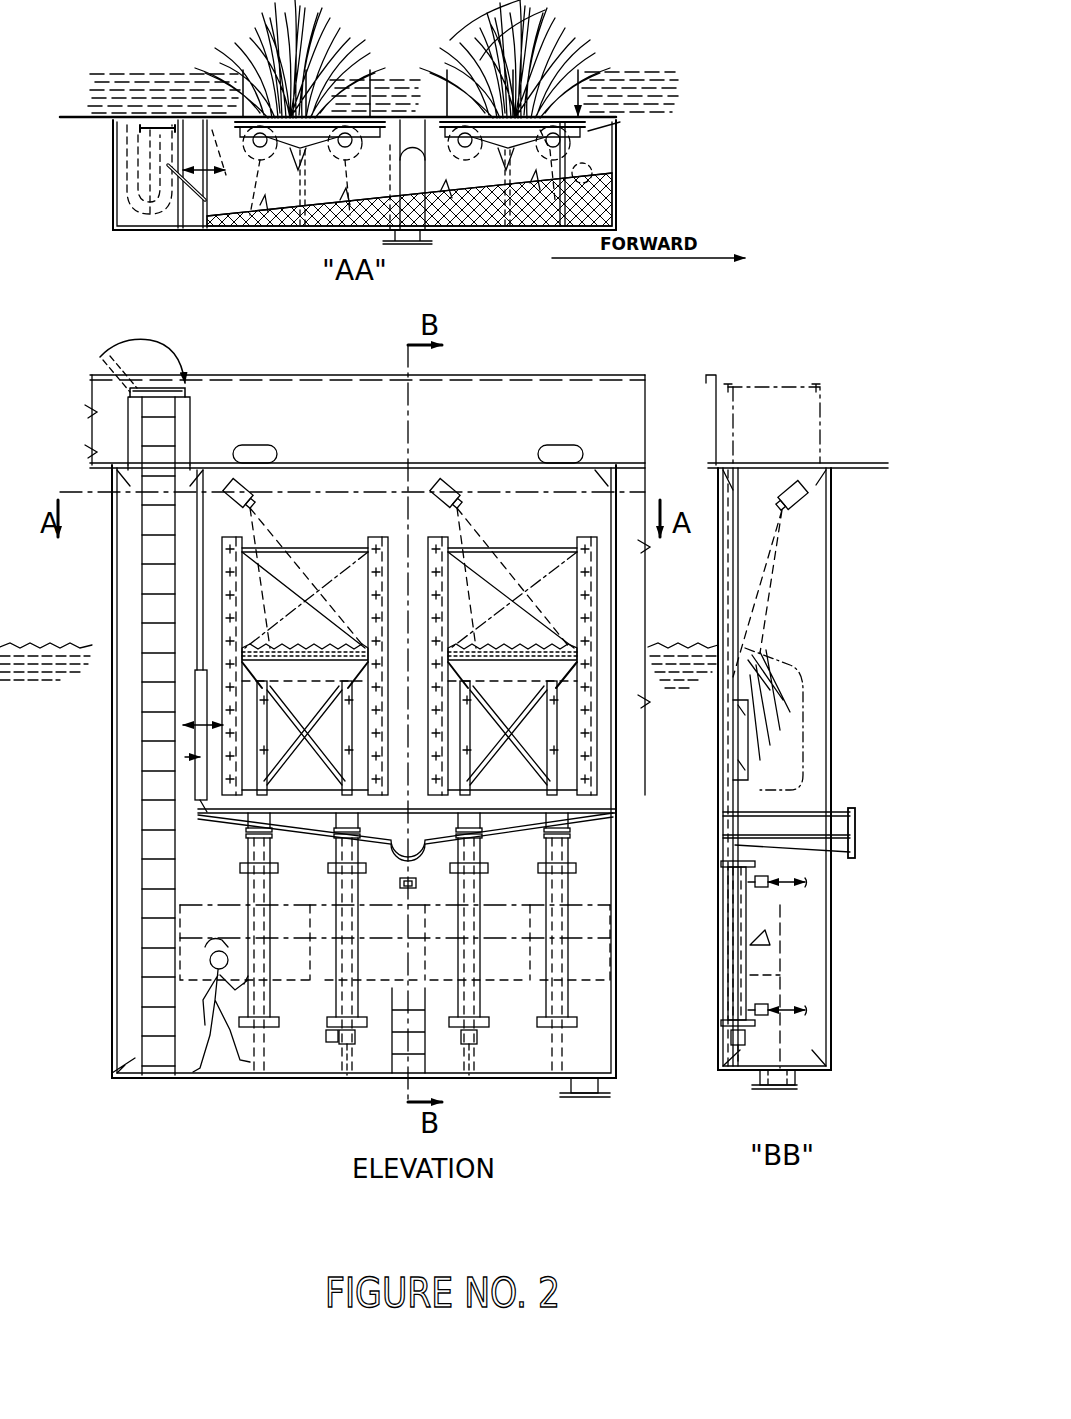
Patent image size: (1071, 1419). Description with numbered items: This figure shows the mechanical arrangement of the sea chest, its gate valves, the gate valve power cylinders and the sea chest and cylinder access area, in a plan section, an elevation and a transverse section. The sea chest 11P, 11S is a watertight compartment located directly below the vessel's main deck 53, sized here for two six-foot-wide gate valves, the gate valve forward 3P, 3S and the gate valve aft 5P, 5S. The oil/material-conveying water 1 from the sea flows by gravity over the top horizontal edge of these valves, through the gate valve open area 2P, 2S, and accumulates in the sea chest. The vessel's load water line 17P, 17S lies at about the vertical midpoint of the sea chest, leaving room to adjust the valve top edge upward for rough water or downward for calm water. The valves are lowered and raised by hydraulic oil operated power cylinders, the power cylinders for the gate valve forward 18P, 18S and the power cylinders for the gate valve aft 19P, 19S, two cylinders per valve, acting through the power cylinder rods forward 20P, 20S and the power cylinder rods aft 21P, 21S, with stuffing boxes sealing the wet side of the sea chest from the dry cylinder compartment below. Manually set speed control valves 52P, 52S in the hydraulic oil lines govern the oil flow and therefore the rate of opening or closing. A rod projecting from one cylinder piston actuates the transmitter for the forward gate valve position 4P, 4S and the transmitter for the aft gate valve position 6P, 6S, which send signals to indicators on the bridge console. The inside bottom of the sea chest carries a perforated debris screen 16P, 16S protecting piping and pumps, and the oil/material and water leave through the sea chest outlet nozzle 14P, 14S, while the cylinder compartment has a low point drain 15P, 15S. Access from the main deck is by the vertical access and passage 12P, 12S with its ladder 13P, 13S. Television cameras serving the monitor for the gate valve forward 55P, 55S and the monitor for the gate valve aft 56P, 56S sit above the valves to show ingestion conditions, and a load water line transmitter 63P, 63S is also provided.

The oil/material-conveying water 1 is at (578, 38).
The gate valve open area, forward-aft 2P is at (316, 666).
The gate valve open area, forward-aft 2S is at (470, 585).
The gate valve forward 3P is at (502, 410).
The gate valve forward 3S is at (420, 135).
The transmitter, forward gate valve position 4P is at (513, 976).
The transmitter, forward gate valve position 4S is at (457, 1048).
The gate valve aft 5P is at (204, 523).
The gate valve aft 5S is at (290, 133).
The transmitter, aft gate valve position 6P is at (302, 976).
The transmitter, aft gate valve position 6S is at (330, 1042).
The sea chest 11P is at (406, 295).
The sea chest 11S is at (205, 200).
The access and passage, sea chest 12P is at (461, 425).
The access and passage, sea chest 12S is at (197, 150).
The ladder, access and passage sea chest and power cylinders 13P is at (454, 500).
The ladder, access and passage sea chest and power cylinders 13S is at (140, 142).
The nozzle, sea chest outlet 14P is at (640, 572).
The nozzle, sea chest outlet 14S is at (415, 246).
The drain, cylinder access area 15P is at (479, 642).
The drain, cylinder access area 15S is at (598, 171).
The debris screen, sea chest 16P is at (636, 491).
The debris screen, sea chest 16S is at (548, 168).
The load water line, vessel 17P is at (359, 620).
The load water line, vessel 17S is at (80, 642).
The power cylinders, gate valve forward 18P is at (468, 823).
The power cylinders, gate valve forward 18S is at (478, 960).
The power cylinders, gate valve aft 19P is at (168, 707).
The power cylinders, gate valve aft 19S is at (310, 840).
The power cylinder rods, forward 20P is at (435, 930).
The power cylinder rods, forward 20S is at (523, 975).
The power cylinder rods, aft 21P is at (138, 701).
The power cylinder rods, aft 21S is at (250, 880).
The speed control valve 52P is at (815, 964).
The speed control valve 52S is at (770, 893).
The main deck, vessel 53 is at (505, 462).
The television monitor, gate valve forward 55P is at (665, 502).
The television monitor, gate valve forward 55S is at (448, 480).
The television monitor, gate valve aft 56P is at (281, 488).
The television monitor, gate valve aft 56S is at (228, 478).
The load water line transmitter 63P is at (614, 1004).
The load water line transmitter 63S is at (355, 1048).